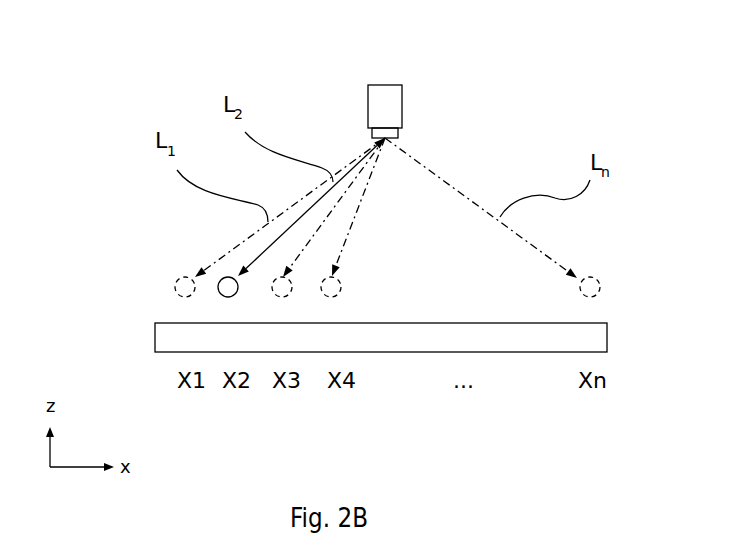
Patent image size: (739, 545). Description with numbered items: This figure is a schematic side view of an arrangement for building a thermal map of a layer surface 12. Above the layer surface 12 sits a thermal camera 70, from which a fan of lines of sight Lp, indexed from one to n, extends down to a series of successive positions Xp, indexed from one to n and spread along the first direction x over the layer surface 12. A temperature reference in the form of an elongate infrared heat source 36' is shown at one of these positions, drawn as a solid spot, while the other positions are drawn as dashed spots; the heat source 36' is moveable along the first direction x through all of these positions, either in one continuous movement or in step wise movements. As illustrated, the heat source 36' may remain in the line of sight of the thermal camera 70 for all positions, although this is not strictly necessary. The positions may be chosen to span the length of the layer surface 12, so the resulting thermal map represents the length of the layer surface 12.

The thermal camera 70 is at (386, 82).
The layer surface 12 is at (175, 323).
The elongate infrared heat source 36' is at (173, 244).